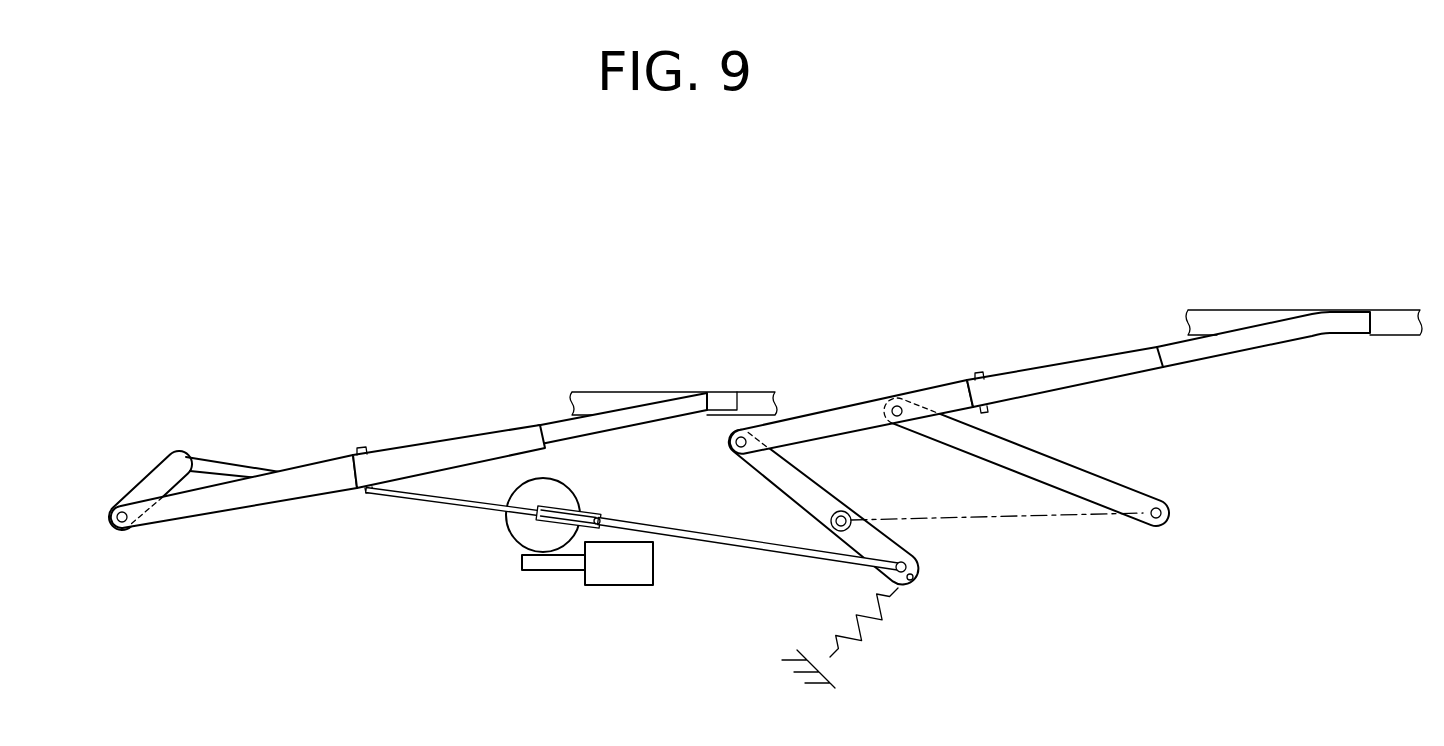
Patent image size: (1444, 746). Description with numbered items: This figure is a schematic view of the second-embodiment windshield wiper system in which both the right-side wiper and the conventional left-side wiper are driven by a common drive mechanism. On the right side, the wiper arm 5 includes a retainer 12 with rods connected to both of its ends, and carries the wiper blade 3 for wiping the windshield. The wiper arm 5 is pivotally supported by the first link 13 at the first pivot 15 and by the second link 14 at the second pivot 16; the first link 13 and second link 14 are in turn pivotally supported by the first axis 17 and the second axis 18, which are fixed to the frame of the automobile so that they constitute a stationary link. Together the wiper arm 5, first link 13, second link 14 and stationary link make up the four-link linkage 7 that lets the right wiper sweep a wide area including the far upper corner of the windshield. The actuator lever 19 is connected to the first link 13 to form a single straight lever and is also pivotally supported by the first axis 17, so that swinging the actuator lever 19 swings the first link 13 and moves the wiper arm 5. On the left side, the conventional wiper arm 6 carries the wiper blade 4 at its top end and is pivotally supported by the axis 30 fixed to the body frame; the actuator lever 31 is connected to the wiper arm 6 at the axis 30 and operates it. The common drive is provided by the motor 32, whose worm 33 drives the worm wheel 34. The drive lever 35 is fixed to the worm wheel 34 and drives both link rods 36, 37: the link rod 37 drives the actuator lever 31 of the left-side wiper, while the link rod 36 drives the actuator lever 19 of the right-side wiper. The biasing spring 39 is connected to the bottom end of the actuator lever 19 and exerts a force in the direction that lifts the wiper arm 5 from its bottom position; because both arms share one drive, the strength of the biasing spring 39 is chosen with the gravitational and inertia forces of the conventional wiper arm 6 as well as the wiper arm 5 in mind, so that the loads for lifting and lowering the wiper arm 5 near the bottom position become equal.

The wiper blade 3 is at (1246, 310).
The wiper blade 4 is at (626, 392).
The wiper arm 5 is at (1037, 353).
The wiper arm 6 is at (405, 440).
The four-link linkage 7 is at (823, 413).
The retainer 12 is at (996, 378).
The first link 13 is at (820, 487).
The second link 14 is at (1071, 480).
The first pivot 15 is at (730, 446).
The second pivot 16 is at (894, 404).
The first axis 17 is at (851, 514).
The second axis 18 is at (1168, 513).
The actuator lever 19 is at (906, 547).
The axis 30 is at (124, 530).
The actuator lever 31 is at (156, 473).
The motor 32 is at (621, 586).
The worm 33 is at (536, 572).
The worm wheel 34 is at (506, 518).
The drive lever 35 is at (572, 509).
The link rod 36 is at (738, 553).
The link rod 37 is at (377, 498).
The biasing spring 39 is at (866, 643).